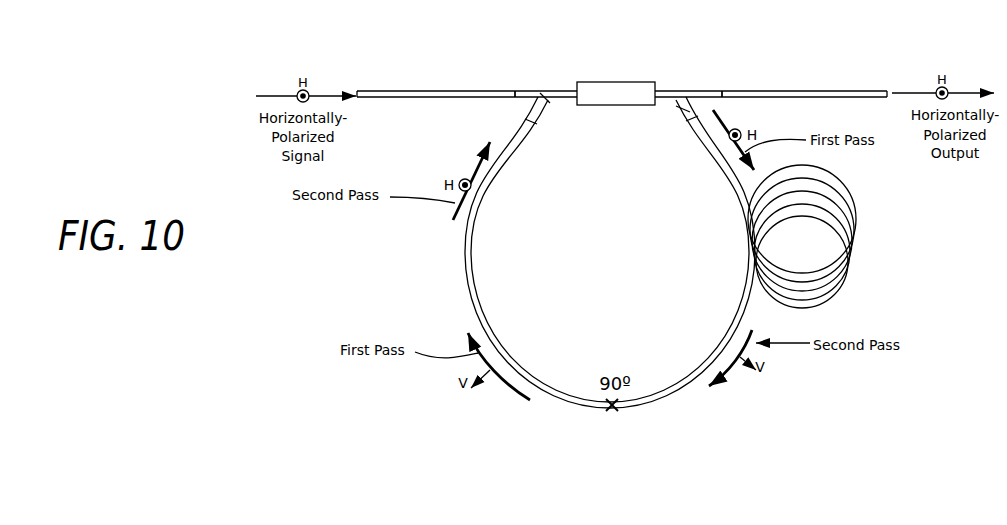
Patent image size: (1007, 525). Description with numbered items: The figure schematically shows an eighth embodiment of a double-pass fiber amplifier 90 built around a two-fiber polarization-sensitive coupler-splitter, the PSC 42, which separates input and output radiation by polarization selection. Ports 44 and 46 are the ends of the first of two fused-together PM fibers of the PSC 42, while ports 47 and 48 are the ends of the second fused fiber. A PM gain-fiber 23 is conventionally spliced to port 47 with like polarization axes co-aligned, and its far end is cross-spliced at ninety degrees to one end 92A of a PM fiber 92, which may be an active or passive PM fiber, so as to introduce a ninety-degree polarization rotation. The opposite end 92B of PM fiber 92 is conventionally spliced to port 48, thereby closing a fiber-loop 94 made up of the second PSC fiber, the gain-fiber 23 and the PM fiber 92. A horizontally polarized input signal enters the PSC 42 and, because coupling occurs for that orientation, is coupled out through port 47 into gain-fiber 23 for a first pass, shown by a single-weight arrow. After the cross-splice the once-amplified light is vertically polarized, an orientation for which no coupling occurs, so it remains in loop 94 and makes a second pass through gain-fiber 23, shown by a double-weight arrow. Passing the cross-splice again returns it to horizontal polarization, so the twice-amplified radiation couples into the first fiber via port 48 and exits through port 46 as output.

The PM gain-fiber 23 is at (863, 237).
The PSC 42 is at (617, 108).
The port 44 is at (546, 94).
The port 46 is at (692, 90).
The port 47 is at (683, 110).
The port 48 is at (545, 100).
The amplifier 90 is at (574, 214).
The PM fiber 92 is at (567, 254).
The end 92A is at (584, 400).
The opposite end 92B is at (528, 124).
The fiber-loop 94 is at (648, 254).